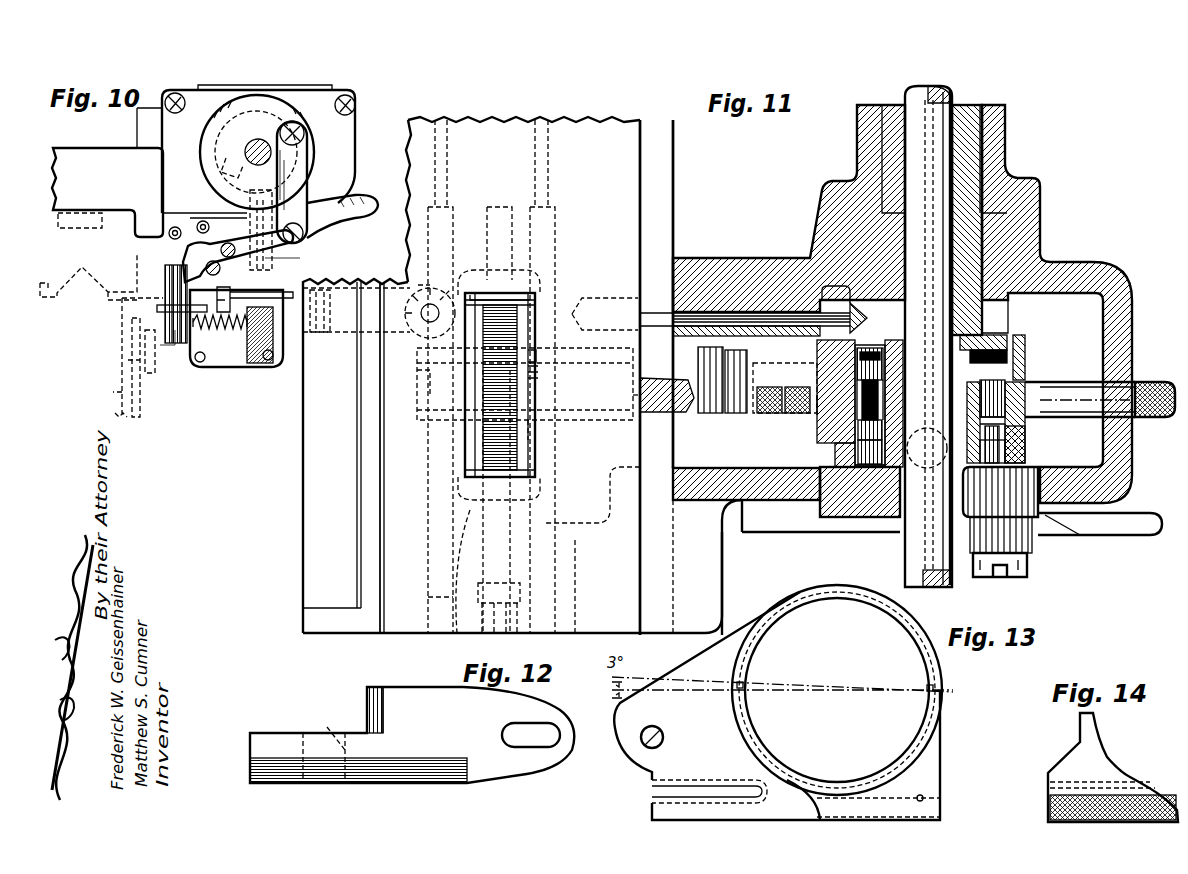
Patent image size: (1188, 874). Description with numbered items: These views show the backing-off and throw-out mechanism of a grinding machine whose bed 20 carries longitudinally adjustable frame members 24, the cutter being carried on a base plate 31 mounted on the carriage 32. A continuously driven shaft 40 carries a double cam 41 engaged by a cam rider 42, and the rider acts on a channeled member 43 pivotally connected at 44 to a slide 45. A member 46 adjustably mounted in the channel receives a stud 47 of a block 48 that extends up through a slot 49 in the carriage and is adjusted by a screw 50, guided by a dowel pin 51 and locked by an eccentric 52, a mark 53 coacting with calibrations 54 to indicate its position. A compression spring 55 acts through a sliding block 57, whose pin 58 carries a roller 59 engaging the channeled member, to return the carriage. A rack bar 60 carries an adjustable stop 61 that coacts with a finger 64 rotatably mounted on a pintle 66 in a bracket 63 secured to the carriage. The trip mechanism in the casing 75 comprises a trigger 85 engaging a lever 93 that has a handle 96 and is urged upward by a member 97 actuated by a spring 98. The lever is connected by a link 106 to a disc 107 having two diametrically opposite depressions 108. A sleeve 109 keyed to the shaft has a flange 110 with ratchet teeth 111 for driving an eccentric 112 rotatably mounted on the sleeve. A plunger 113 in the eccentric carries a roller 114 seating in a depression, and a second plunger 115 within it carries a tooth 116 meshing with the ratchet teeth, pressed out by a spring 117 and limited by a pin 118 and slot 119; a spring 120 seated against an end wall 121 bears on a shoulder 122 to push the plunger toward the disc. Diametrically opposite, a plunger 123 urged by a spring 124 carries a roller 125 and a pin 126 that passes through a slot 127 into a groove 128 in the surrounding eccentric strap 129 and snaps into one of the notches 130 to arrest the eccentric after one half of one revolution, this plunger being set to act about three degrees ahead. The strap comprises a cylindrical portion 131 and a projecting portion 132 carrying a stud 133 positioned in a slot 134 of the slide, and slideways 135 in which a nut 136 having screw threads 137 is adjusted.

In FIG. 10, the bed 20 is at (113, 392).
In FIG. 10, the frame members 24 is at (135, 266).
In FIG. 10, the base plate 31 is at (348, 540).
In FIG. 10, the carriage 32 is at (630, 226).
In FIG. 11, the carriage 32 is at (630, 226).
In FIG. 10, the shaft 40 is at (246, 149).
In FIG. 11, the shaft 40 is at (950, 142).
In FIG. 11, the cam 41 is at (995, 309).
In FIG. 11, the cam rider 42 is at (835, 312).
In FIG. 10, the channeled member 43 is at (541, 286).
In FIG. 10, the pivotal connection 44 is at (545, 402).
In FIG. 12, the pivotal connection 44 is at (327, 728).
In FIG. 11, the slide 45 is at (683, 412).
In FIG. 12, the slide 45 is at (508, 768).
In FIG. 10, the member 46 is at (548, 304).
In FIG. 10, the stud 47 is at (466, 396).
In FIG. 10, the block 48 is at (470, 373).
In FIG. 10, the slot 49 is at (478, 293).
In FIG. 10, the screw 50 is at (520, 480).
In FIG. 10, the dowel pin 51 is at (540, 433).
In FIG. 10, the eccentric 52 is at (455, 540).
In FIG. 10, the mark 53 is at (537, 357).
In FIG. 10, the calibrations 54 is at (540, 373).
In FIG. 10, the compression spring 55 is at (322, 334).
In FIG. 10, the sliding block 57 is at (384, 340).
In FIG. 10, the pin 58 is at (414, 300).
In FIG. 10, the roller 59 is at (420, 288).
In FIG. 10, the rack bar 60 is at (128, 339).
In FIG. 10, the stop 61 is at (147, 377).
In FIG. 10, the bracket 63 is at (137, 119).
In FIG. 11, the bracket 63 is at (716, 266).
In FIG. 10, the finger 64 is at (157, 308).
In FIG. 10, the pintle 66 is at (176, 346).
In FIG. 11, the casing 75 is at (863, 528).
In FIG. 10, the trigger 85 is at (210, 256).
In FIG. 10, the lever 93 is at (280, 253).
In FIG. 10, the handle 96 is at (360, 219).
In FIG. 11, the handle 96 is at (1140, 536).
In FIG. 10, the actuating member 97 is at (285, 274).
In FIG. 11, the actuating member 97 is at (905, 522).
In FIG. 10, the spring 98 is at (272, 352).
In FIG. 11, the link 106 is at (1030, 557).
In FIG. 11, the disc 107 is at (1075, 522).
In FIG. 11, the depressions 108 is at (830, 513).
In FIG. 11, the sleeve 109 is at (1010, 352).
In FIG. 11, the flange 110 is at (998, 332).
In FIG. 11, the ratchet teeth 111 is at (1008, 345).
In FIG. 11, the eccentric 112 is at (815, 418).
In FIG. 11, the plunger 113 is at (832, 447).
In FIG. 11, the roller 114 is at (850, 460).
In FIG. 11, the second plunger 115 is at (886, 352).
In FIG. 11, the tooth 116 is at (884, 348).
In FIG. 11, the spring 117 is at (887, 384).
In FIG. 11, the pin 118 is at (887, 358).
In FIG. 11, the slot 119 is at (887, 372).
In FIG. 11, the spring 120 is at (887, 400).
In FIG. 11, the end wall 121 is at (818, 370).
In FIG. 11, the shoulder 122 is at (887, 420).
In FIG. 11, the plunger 123 is at (1045, 400).
In FIG. 11, the spring 124 is at (1000, 380).
In FIG. 11, the roller 125 is at (1006, 456).
In FIG. 11, the pin 126 is at (1006, 420).
In FIG. 11, the slot 127 is at (1006, 433).
In FIG. 11, the groove 128 is at (1027, 437).
In FIG. 13, the groove 128 is at (936, 670).
In FIG. 11, the eccentric strap 129 is at (1050, 383).
In FIG. 13, the eccentric strap 129 is at (912, 617).
In FIG. 13, the notches 130 is at (744, 685).
In FIG. 13, the cylindrical portion 131 is at (940, 710).
In FIG. 13, the laterally projecting portion 132 is at (688, 676).
In FIG. 13, the stud 133 is at (658, 730).
In FIG. 12, the slot 134 is at (548, 748).
In FIG. 13, the slideways 135 is at (670, 779).
In FIG. 14, the nut 136 is at (1110, 763).
In FIG. 14, the screw threads 137 is at (1165, 796).